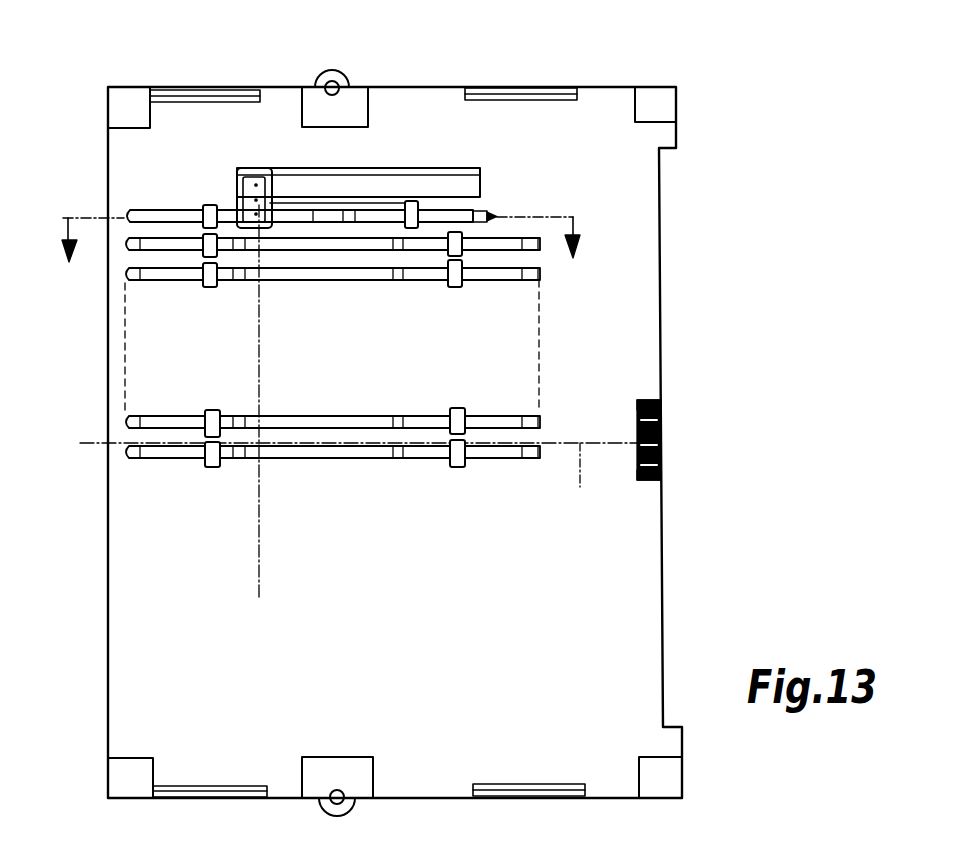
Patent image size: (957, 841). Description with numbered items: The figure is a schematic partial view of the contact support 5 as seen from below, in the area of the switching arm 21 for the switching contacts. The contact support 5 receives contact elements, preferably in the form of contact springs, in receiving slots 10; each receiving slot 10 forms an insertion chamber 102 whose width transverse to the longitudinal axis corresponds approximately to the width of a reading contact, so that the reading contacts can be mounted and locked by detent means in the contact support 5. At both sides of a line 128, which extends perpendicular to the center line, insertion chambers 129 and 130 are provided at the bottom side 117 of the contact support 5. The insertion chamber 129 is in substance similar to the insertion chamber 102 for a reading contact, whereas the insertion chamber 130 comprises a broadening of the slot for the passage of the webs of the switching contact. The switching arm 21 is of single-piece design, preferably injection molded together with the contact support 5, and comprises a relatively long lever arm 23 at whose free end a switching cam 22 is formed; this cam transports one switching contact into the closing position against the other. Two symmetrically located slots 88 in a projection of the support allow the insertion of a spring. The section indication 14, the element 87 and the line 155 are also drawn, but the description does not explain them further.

The contact support 5 is at (453, 86).
The receiving slot 10 is at (338, 448).
The section line 14 is at (316, 242).
The switching arm 21 is at (354, 118).
The switching cam 22 is at (258, 168).
The lever arm 23 is at (433, 183).
The connector 87 is at (662, 428).
The slot 88 is at (665, 402).
The insertion chamber 102 is at (178, 448).
The bottom side 117 is at (600, 604).
The line 128 is at (262, 553).
The insertion chamber 129 is at (178, 216).
The insertion chamber 130 is at (472, 213).
The horizontal center line 155 is at (360, 482).